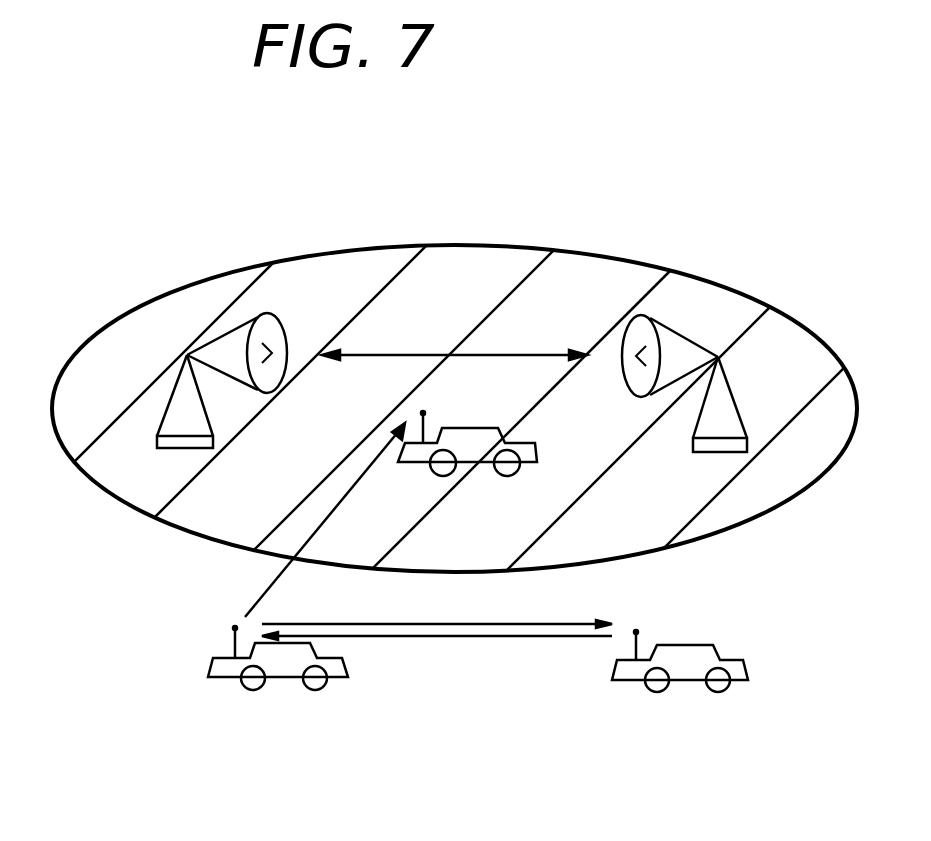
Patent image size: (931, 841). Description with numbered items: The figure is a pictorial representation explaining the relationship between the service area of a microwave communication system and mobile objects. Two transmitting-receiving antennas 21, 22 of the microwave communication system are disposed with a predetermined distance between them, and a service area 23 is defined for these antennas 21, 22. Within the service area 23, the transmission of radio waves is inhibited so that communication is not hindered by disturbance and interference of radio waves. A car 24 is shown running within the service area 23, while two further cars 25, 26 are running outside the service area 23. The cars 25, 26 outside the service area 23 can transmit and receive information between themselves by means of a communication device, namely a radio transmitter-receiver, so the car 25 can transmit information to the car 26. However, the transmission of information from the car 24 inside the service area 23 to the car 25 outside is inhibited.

The transmitting-receiving antenna 21 is at (285, 327).
The transmitting-receiving antenna 22 is at (683, 330).
The service area 23 is at (473, 245).
The car 24 is at (537, 453).
The car 25 is at (208, 670).
The car 26 is at (748, 672).